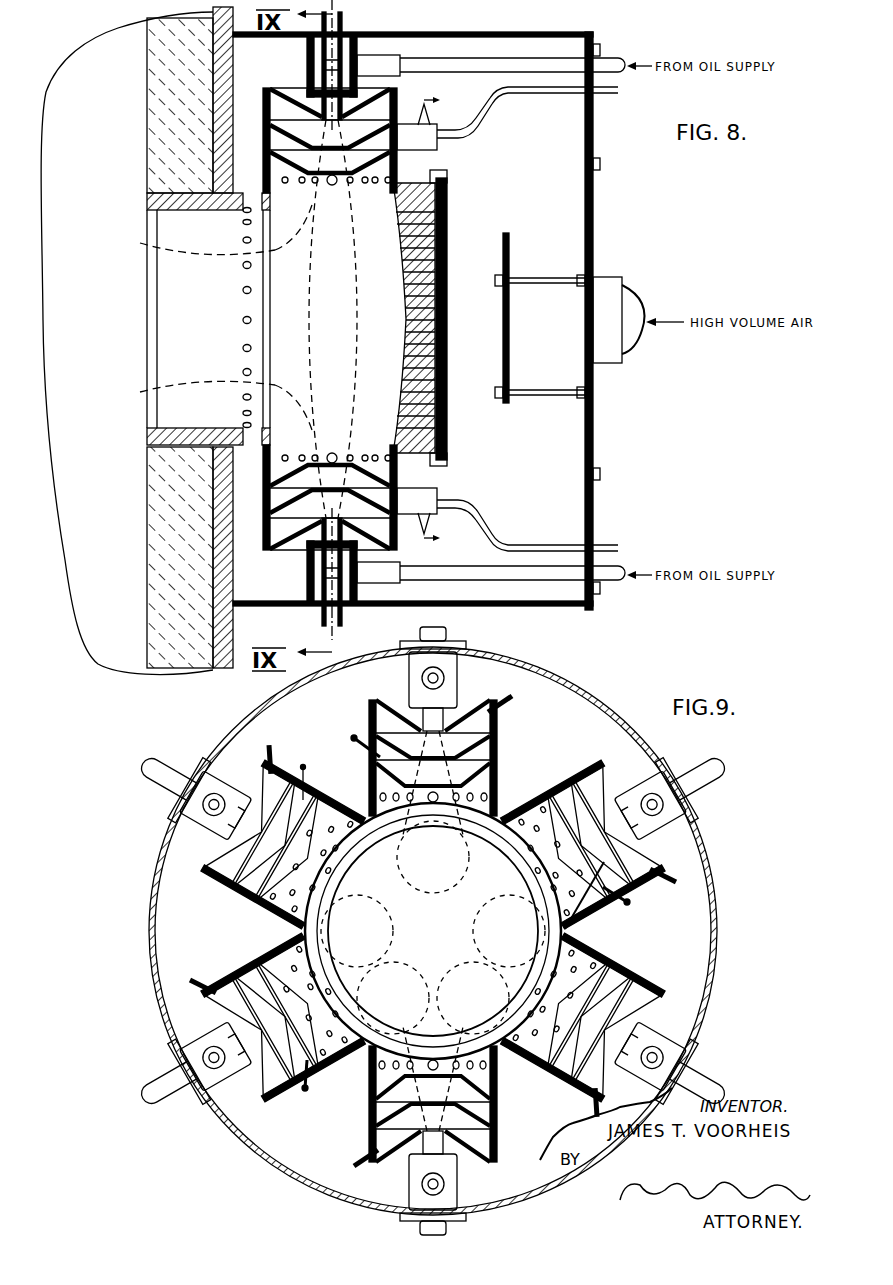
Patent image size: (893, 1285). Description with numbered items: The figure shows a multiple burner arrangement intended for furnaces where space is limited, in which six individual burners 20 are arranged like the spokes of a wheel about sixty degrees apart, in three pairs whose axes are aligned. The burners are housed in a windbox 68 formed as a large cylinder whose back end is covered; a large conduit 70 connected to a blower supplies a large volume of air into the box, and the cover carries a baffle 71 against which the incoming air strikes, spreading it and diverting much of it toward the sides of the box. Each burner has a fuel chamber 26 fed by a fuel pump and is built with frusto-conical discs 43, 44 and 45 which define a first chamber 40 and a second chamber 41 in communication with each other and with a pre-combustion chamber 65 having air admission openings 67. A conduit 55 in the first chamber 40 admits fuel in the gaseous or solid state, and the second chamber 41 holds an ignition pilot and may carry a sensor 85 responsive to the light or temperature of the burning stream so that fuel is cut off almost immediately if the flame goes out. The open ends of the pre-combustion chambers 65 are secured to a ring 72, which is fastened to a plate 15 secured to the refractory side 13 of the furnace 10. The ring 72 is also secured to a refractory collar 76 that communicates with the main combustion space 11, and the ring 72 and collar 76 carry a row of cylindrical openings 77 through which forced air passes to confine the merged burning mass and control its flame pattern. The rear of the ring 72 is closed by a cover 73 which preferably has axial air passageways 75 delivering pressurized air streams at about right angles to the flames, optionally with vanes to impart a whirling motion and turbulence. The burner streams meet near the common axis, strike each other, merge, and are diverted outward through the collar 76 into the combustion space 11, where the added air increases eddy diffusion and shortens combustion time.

In FIG. 8, the furnace 10 is at (146, 674).
In FIG. 8, the main combustion space 11 is at (100, 355).
In FIG. 8, the refractory side 13 is at (147, 140).
In FIG. 8, the plate 15 is at (225, 668).
In FIG. 8, the individual burner 20 is at (427, 317).
In FIG. 9, the individual burner 20 is at (252, 907).
In FIG. 8, the chamber 26 is at (352, 50).
In FIG. 9, the chamber 26 is at (450, 672).
In FIG. 8, the chamber 40 is at (393, 110).
In FIG. 9, the chamber 40 is at (375, 717).
In FIG. 8, the chamber 41 is at (400, 152).
In FIG. 9, the chamber 41 is at (372, 770).
In FIG. 8, the frusto-conical disc 43 is at (284, 98).
In FIG. 9, the frusto-conical disc 43 is at (462, 703).
In FIG. 8, the frusto-conical disc 44 is at (268, 108).
In FIG. 9, the frusto-conical disc 44 is at (497, 735).
In FIG. 8, the frusto-conical disc 45 is at (268, 128).
In FIG. 9, the frusto-conical disc 45 is at (497, 760).
In FIG. 9, the conduit 55 is at (512, 703).
In FIG. 8, the pre-combustion chamber 65 is at (367, 302).
In FIG. 9, the pre-combustion chamber 65 is at (470, 927).
In FIG. 8, the air admission opening 67 is at (285, 186).
In FIG. 9, the air admission opening 67 is at (462, 801).
In FIG. 8, the windbox 68 is at (590, 32).
In FIG. 9, the windbox 68 is at (568, 688).
In FIG. 8, the conduit 70 is at (602, 282).
In FIG. 8, the baffle 71 is at (509, 264).
In FIG. 8, the ring 72 is at (438, 196).
In FIG. 9, the ring 72 is at (497, 810).
In FIG. 8, the cover 73 is at (440, 430).
In FIG. 8, the axial air passageway 75 is at (426, 348).
In FIG. 8, the refractory collar 76 is at (172, 432).
In FIG. 9, the refractory collar 76 is at (568, 929).
In FIG. 8, the cylindrical opening 77 is at (250, 347).
In FIG. 9, the sensor 85 is at (354, 740).